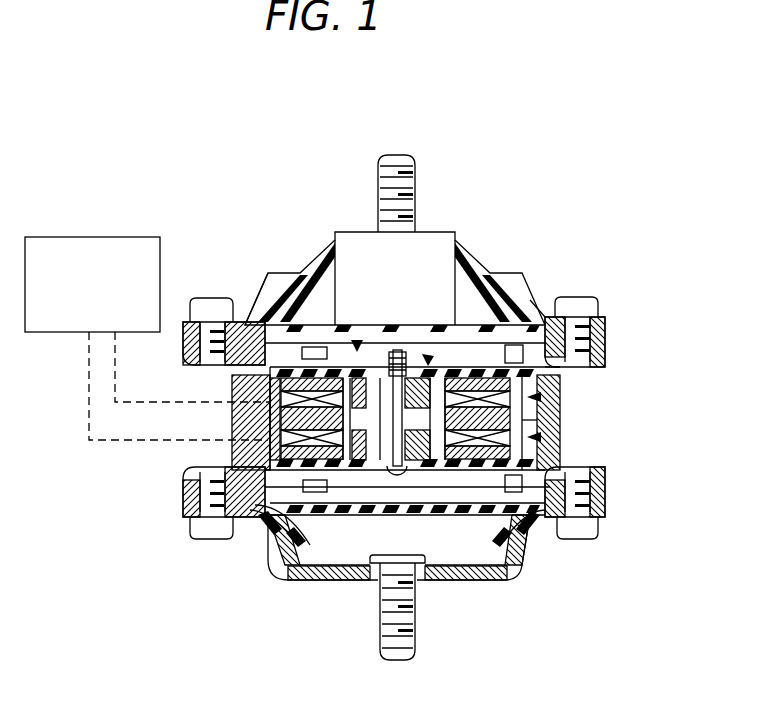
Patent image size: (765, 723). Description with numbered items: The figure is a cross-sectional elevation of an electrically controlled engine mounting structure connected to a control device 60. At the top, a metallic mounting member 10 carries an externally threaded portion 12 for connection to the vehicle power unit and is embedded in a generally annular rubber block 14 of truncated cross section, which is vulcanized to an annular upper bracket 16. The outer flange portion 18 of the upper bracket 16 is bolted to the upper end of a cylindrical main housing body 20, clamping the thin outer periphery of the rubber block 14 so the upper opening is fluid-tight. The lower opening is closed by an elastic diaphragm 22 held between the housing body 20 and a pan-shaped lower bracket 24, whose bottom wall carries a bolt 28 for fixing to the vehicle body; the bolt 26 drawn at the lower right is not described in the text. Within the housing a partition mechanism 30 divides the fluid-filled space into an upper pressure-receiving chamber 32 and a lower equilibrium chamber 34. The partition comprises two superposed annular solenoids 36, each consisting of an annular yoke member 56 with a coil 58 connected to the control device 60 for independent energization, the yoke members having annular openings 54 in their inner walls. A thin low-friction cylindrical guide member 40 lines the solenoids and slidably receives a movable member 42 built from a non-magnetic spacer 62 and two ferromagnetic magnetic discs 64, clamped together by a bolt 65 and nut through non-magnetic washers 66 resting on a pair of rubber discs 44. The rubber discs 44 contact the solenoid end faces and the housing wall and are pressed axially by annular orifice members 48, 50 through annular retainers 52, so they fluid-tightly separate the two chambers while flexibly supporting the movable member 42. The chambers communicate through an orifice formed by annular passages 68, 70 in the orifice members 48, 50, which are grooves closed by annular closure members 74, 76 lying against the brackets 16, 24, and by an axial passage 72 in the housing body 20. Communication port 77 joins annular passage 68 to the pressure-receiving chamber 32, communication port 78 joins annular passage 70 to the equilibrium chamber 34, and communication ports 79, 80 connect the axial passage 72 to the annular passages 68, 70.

The mounting member 10 is at (432, 258).
The externally threaded portion 12 is at (398, 157).
The rubber block 14 is at (486, 272).
The upper bracket 16 is at (540, 310).
The outer flange portion 18 is at (597, 331).
The main housing body 20 is at (560, 405).
The elastic diaphragm 22 is at (305, 568).
The lower bracket 24 is at (515, 572).
The lower right bolt 26 is at (600, 513).
The bolt 28 is at (398, 652).
The partition mechanism 30 is at (357, 338).
The pressure-receiving chamber 32 is at (283, 330).
The equilibrium chamber 34 is at (272, 548).
The annular solenoids 36 is at (540, 397).
The cylindrical guide member 40 is at (342, 475).
The movable member 42 is at (432, 470).
The rubber discs 44 is at (485, 368).
The orifice member 48 is at (556, 373).
The orifice member 50 is at (557, 463).
The annular retainers 52 is at (270, 372).
The annular openings 54 is at (445, 385).
The annular yoke member 56 is at (270, 411).
The coil 58 is at (338, 368).
The control device 60 is at (97, 237).
The non-magnetic spacer 62 is at (370, 478).
The magnetic discs 64 is at (428, 368).
The bolt 65 is at (408, 478).
The non-magnetic washers 66 is at (378, 375).
The annular passage 68 is at (258, 340).
The annular passage 70 is at (255, 525).
The axial passage 72 is at (540, 428).
The annular closure member 74 is at (262, 345).
The annular closure member 76 is at (290, 522).
The communication port 77 is at (290, 330).
The communication port 78 is at (300, 540).
The communication port 79 is at (547, 362).
The communication port 80 is at (525, 517).